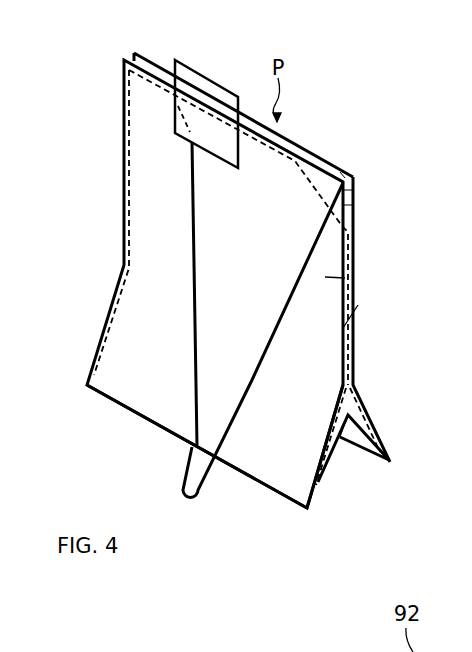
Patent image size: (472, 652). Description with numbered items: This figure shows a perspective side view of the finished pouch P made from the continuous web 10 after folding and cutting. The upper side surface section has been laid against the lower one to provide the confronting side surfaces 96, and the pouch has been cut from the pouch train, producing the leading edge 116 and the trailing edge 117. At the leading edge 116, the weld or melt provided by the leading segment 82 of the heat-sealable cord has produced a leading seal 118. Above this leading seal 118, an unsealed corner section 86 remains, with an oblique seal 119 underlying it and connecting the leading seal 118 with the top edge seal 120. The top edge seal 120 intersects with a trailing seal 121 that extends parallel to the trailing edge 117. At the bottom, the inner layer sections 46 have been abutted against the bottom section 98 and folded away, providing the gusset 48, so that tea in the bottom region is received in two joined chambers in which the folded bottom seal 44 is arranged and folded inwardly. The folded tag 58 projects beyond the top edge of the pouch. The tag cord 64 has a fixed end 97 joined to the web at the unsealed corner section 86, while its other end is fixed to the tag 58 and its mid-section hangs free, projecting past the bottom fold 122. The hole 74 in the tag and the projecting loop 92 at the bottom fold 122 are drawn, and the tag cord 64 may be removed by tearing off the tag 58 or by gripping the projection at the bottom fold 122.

The folded tag 58 is at (212, 82).
The aperture in tab 74 is at (183, 119).
The top edge seal 120 is at (330, 187).
The unsealed corner section 86 is at (340, 170).
The fixed end of the tag cord 97 is at (347, 195).
The oblique seal 119 is at (345, 205).
The leading edge 116 is at (351, 225).
The confronting side surfaces 96 is at (350, 285).
The leading seal 118 is at (352, 345).
The trailing edge 117 is at (120, 184).
The trailing seal 121 is at (123, 235).
The tag cord 64 is at (195, 250).
The bottom loop 92 is at (190, 447).
The bottom section 98 is at (323, 372).
The bottom fold 122 is at (248, 476).
The inner layer sections 46 is at (322, 492).
The folded bottom seal 44 is at (345, 440).
The gusset 48 is at (370, 462).
The leading segment of the heat-sealable cord 82 is at (327, 651).
The web 10 is at (358, 651).